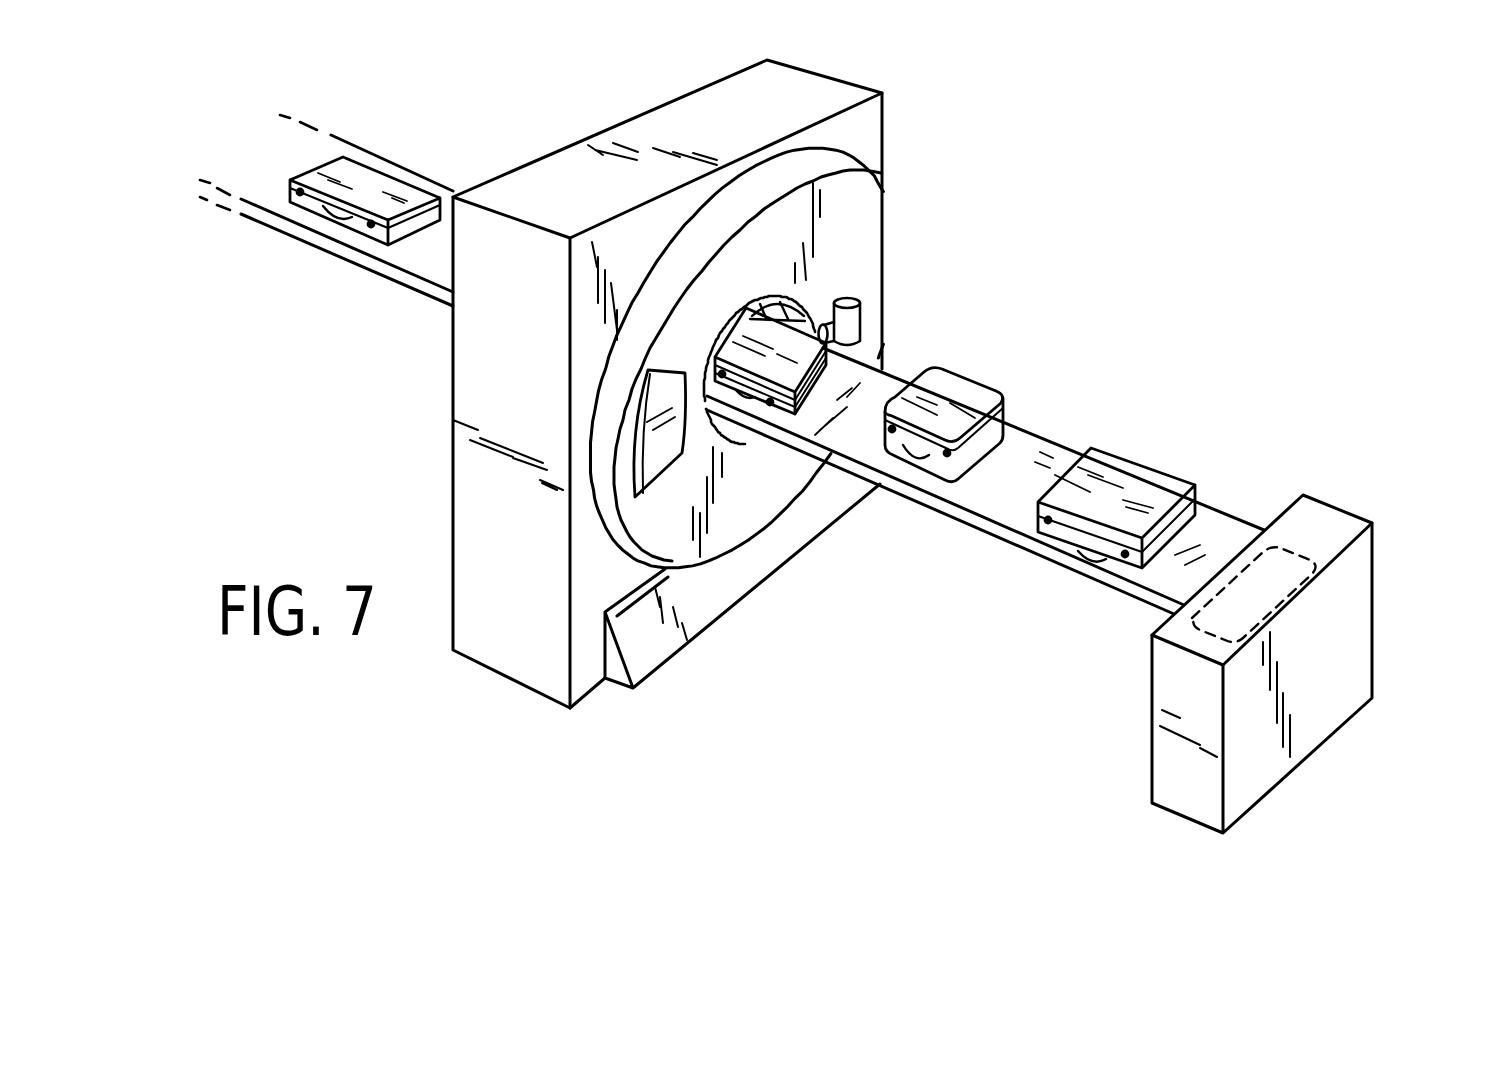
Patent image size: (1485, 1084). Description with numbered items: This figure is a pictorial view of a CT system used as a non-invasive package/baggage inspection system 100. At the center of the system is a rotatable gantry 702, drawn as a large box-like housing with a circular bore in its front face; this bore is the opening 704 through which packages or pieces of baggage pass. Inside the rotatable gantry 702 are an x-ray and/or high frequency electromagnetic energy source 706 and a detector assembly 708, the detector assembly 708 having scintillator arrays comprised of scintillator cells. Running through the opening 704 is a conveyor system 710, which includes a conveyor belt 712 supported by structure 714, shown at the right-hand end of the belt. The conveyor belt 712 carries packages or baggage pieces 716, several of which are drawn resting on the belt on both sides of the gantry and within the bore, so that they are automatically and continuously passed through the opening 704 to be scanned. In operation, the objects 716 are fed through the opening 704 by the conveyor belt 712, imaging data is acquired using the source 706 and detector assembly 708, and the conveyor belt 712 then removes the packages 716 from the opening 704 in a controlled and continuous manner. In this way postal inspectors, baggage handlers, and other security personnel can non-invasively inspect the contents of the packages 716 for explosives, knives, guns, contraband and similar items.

The package/baggage inspection system 100 is at (1155, 246).
The rotatable gantry 702 is at (833, 235).
The opening 704 is at (784, 307).
The x-ray and/or high frequency electromagnetic energy source 706 is at (860, 323).
The detector assembly 708 is at (665, 474).
The conveyor system 710 is at (781, 474).
The conveyor belt 712 is at (407, 260).
The structure 714 is at (1357, 627).
The packages or baggage pieces 716 is at (380, 182).